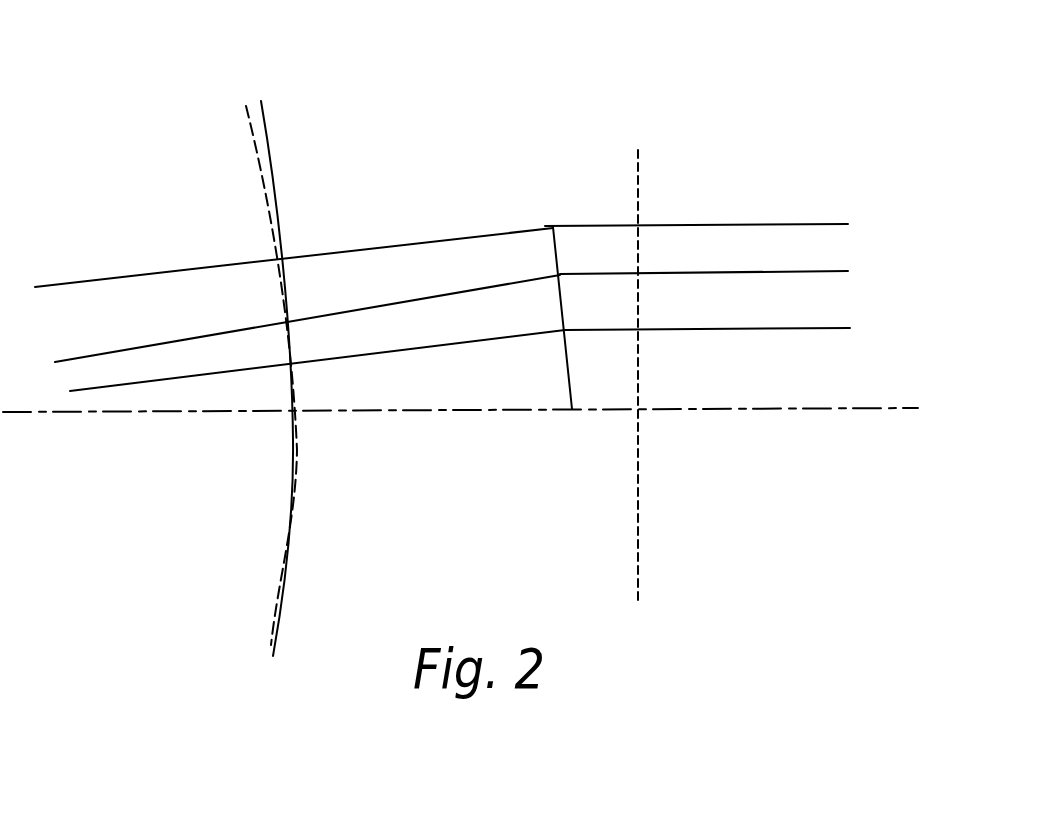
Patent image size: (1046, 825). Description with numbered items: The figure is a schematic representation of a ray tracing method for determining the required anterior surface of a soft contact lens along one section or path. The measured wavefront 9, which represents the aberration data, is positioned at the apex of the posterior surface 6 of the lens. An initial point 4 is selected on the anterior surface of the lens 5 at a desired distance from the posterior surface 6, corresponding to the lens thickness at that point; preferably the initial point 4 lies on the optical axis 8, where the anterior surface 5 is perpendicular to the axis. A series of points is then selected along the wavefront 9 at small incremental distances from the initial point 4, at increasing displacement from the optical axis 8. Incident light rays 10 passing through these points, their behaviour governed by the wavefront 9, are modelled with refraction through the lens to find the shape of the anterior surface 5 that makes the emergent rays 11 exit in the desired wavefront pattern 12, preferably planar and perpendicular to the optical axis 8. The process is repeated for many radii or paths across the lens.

The initial point 4 is at (502, 332).
The anterior surface of the lens 5 is at (548, 240).
The posterior surface 6 is at (265, 120).
The optical axis 8 is at (763, 408).
The wavefront 9 is at (252, 135).
The incident light rays 10 is at (148, 276).
The emergent rays 11 is at (730, 224).
The desired wavefront pattern 12 is at (636, 170).